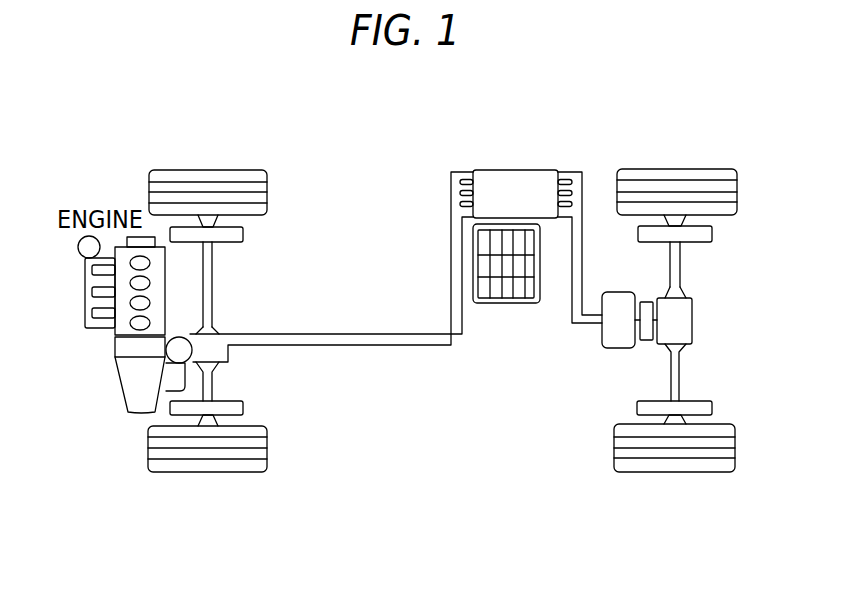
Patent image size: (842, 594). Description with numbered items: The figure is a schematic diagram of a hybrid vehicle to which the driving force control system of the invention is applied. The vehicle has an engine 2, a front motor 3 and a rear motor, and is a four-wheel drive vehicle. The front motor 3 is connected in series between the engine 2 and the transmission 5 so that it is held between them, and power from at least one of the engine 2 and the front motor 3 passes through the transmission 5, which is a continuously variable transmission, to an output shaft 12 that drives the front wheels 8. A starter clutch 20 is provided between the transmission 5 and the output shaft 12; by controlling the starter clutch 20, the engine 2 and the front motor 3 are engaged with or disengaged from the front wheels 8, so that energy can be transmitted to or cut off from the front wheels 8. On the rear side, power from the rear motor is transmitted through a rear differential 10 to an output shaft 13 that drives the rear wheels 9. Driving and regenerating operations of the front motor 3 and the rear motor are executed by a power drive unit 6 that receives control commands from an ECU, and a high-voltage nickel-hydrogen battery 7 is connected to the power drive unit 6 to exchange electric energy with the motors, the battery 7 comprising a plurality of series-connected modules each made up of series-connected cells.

The engine 2 is at (97, 293).
The front motor 3 is at (115, 347).
The transmission 5 is at (120, 385).
The power drive unit 6 is at (515, 170).
The battery 7 is at (503, 303).
The front wheels 8 is at (217, 170).
The rear wheels 9 is at (697, 170).
The rear differential 10 is at (692, 318).
The output shaft 12 is at (213, 273).
The output shaft 13 is at (680, 370).
The starter clutch 20 is at (195, 337).